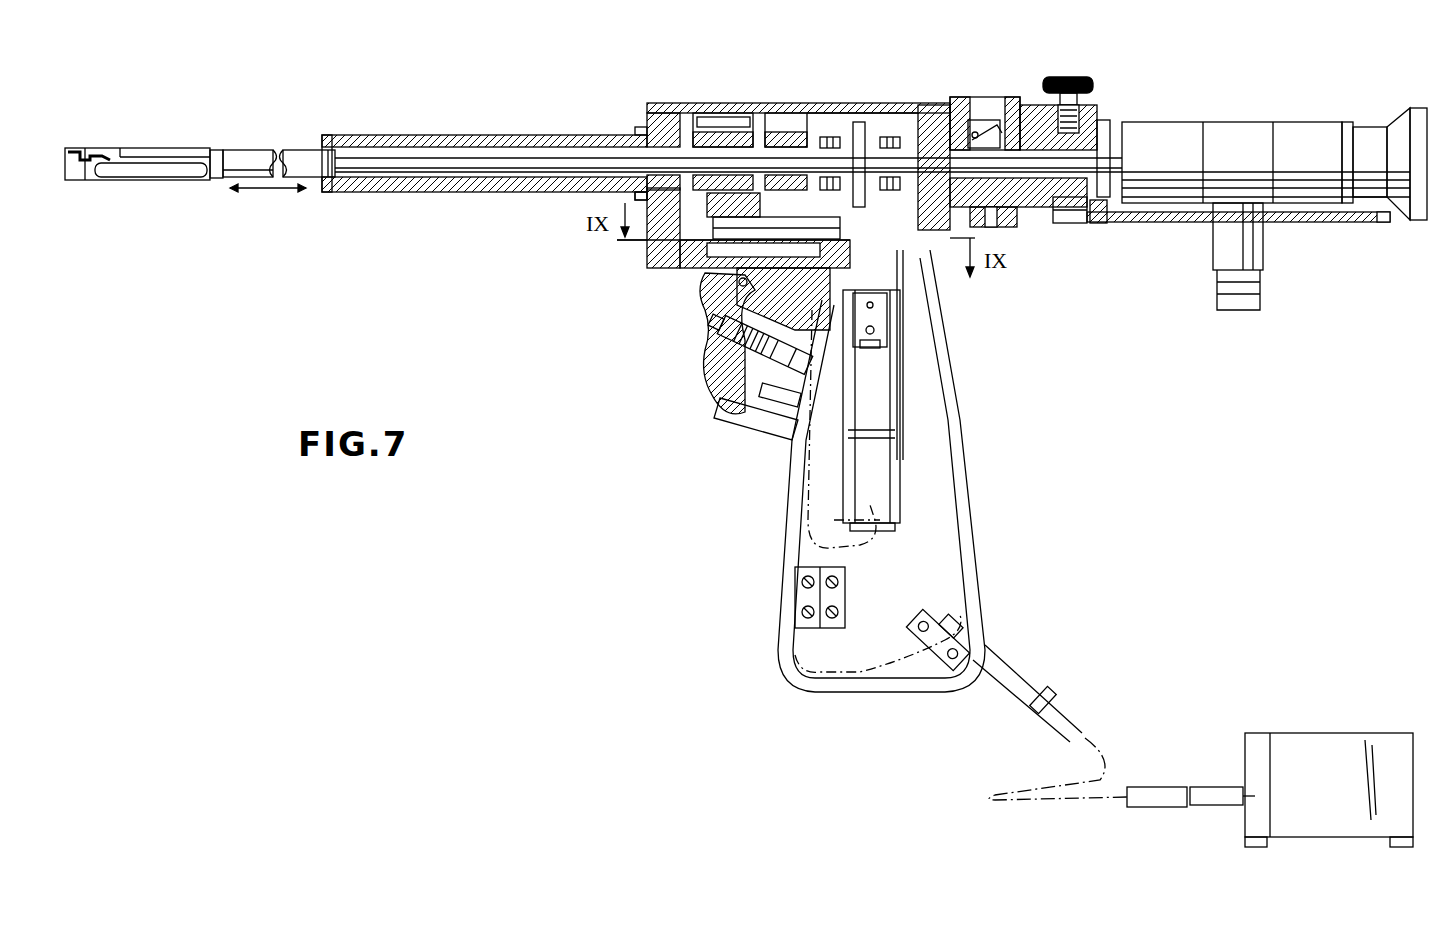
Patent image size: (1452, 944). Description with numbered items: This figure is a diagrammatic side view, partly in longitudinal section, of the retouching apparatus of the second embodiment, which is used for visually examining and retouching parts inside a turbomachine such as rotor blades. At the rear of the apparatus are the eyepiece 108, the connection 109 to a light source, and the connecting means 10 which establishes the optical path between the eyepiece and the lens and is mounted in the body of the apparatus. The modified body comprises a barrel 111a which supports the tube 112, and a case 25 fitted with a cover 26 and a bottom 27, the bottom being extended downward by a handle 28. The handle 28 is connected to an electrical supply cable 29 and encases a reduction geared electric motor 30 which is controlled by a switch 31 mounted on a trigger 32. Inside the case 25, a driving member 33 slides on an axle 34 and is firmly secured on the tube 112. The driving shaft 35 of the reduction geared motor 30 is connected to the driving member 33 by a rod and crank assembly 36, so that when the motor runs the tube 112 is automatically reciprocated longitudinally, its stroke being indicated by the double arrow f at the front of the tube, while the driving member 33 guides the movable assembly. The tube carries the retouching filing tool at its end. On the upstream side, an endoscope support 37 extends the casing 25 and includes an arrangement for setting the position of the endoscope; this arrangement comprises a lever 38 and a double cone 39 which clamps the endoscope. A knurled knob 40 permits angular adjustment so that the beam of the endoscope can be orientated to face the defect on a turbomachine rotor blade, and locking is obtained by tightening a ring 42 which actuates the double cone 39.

The connecting means 10 is at (1116, 132).
The case 25 is at (645, 241).
The cover 26 is at (763, 103).
The bottom 27 is at (688, 288).
The handle 28 is at (789, 497).
The electrical supply cable 29 is at (1328, 809).
The reduction geared electric motor 30 is at (903, 417).
The switch 31 is at (724, 414).
The trigger 32 is at (712, 348).
The driving member 33 is at (723, 137).
The axle 34 is at (690, 135).
The driving shaft 35 is at (930, 305).
The rod and crank assembly 36 is at (690, 259).
The endoscope support 37 is at (1072, 226).
The lever 38 is at (968, 106).
The double cone 39 is at (1033, 222).
The knurled knob 40 is at (1090, 80).
The ring 42 is at (1000, 98).
The eyepiece 108 is at (1411, 120).
The connection to a light source 109 is at (1264, 258).
The barrel 111a is at (396, 135).
The tube 112 is at (243, 157).
The stroke f is at (272, 190).